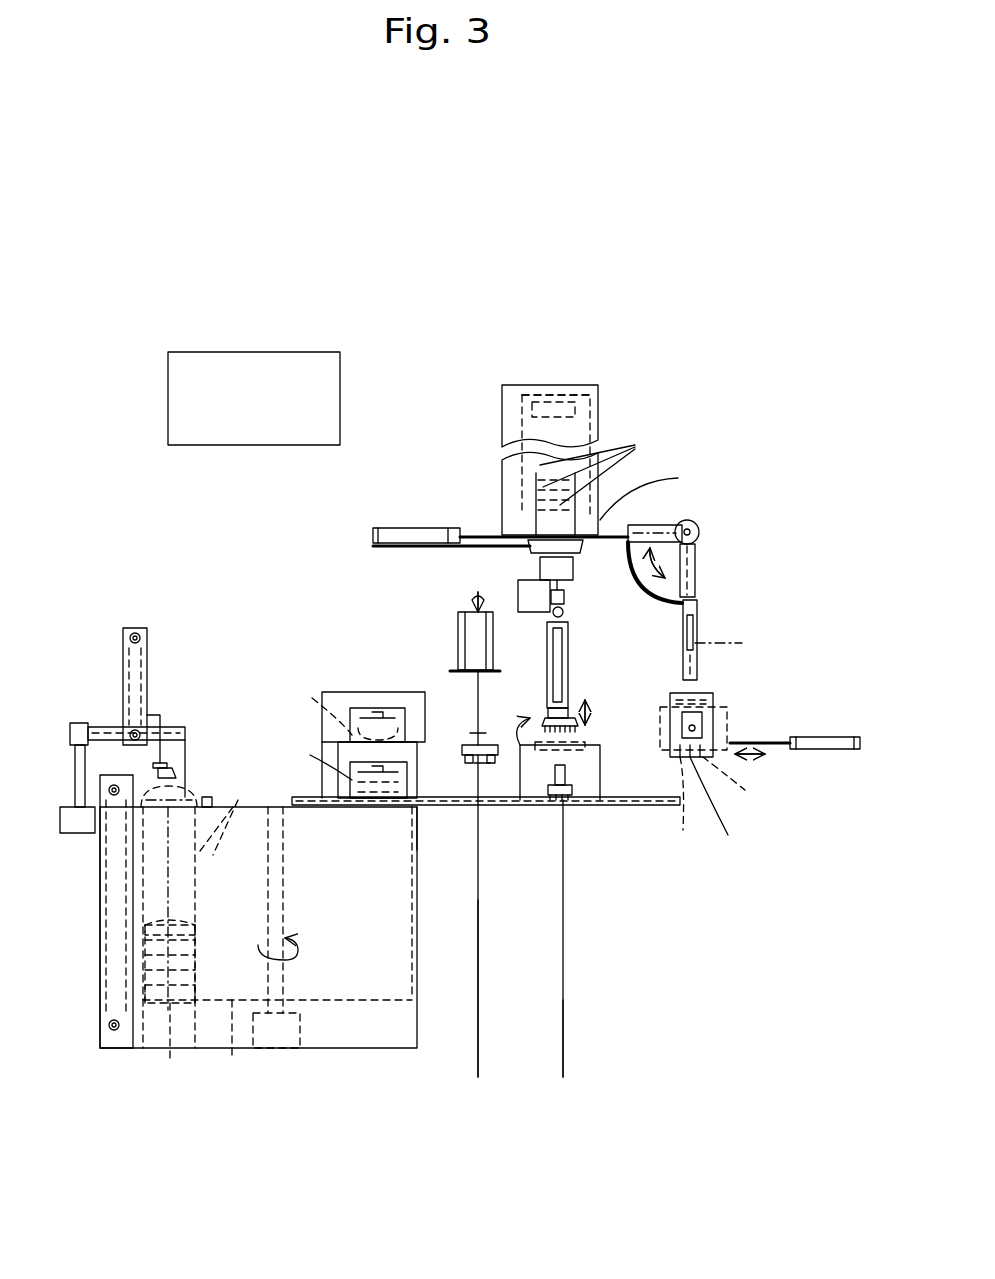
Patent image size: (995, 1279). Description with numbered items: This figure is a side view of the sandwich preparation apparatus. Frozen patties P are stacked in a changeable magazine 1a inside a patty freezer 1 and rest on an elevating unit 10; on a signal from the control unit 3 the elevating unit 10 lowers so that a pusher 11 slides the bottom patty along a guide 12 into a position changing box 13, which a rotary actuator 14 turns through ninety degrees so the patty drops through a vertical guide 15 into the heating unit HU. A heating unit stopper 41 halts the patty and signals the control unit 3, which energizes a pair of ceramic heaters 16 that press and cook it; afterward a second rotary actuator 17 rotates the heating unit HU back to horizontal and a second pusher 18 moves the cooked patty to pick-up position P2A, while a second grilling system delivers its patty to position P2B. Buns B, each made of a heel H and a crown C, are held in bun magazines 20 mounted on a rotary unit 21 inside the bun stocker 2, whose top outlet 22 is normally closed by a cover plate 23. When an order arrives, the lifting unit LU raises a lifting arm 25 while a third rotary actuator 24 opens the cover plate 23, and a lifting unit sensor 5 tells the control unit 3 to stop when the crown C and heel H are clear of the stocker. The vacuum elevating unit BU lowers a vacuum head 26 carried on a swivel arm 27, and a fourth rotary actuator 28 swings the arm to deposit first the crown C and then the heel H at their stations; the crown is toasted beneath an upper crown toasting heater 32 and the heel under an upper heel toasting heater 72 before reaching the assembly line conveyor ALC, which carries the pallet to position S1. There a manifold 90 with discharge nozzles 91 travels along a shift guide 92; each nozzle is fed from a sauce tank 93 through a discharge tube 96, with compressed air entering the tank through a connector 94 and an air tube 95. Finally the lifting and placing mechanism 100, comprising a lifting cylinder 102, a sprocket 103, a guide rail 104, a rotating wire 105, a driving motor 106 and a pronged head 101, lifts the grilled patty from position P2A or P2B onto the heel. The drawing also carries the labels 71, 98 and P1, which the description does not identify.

The patty freezer 1 is at (494, 413).
The changeable magazine 1a is at (578, 398).
The bun stocker 2 is at (428, 933).
The control unit 3 is at (313, 352).
The lifting unit sensor 5 is at (128, 800).
The elevating unit 10 is at (460, 547).
The pusher 11 is at (430, 523).
The guide 12 is at (688, 522).
The position changing box 13 is at (695, 522).
The rotary actuator 14 is at (700, 537).
The vertical guide 15 is at (698, 630).
The ceramic heaters 16 is at (715, 811).
The second rotary actuator 17 is at (718, 700).
The second pusher 18 is at (805, 757).
The bun magazine 20 is at (236, 800).
The rotary unit 21 is at (259, 953).
The outlet 22 is at (148, 790).
The cover plate 23 is at (208, 800).
The third rotary actuator 24 is at (214, 795).
The lifting arm 25 is at (166, 1051).
The vacuum head 26 is at (178, 785).
The swivel arm 27 is at (110, 727).
The fourth rotary actuator 28 is at (70, 807).
The upper crown toasting heater 32 is at (358, 718).
The heating unit stopper 41 is at (720, 813).
The support 71 is at (395, 852).
The upper heel toasting heater 72 is at (398, 805).
The manifold 90 is at (492, 800).
The discharge nozzles 91 is at (475, 765).
The shift guide 92 is at (468, 745).
The sauce tank 93 is at (458, 634).
The connector 94 is at (470, 601).
The air tube 95 is at (525, 550).
The discharge tube 96 is at (458, 680).
The supply line 98 is at (442, 612).
The lifting and placing mechanism 100 is at (562, 800).
The head 101 is at (600, 800).
The lifting cylinder 102 is at (580, 695).
The sprocket 103 is at (563, 628).
The guide rail 104 is at (565, 660).
The rotating wire 105 is at (566, 600).
The driving motor 106 is at (519, 613).
The frozen patties P is at (654, 541).
The pipette position P1 is at (575, 800).
The pick-up position P2A is at (559, 956).
The second patty position P2B is at (559, 1076).
The pallet position S1 is at (475, 1006).
The assembly line conveyor ALC is at (498, 800).
The buns B is at (145, 940).
The crown C is at (48, 972).
The heel H is at (48, 1010).
The lifting unit LU is at (97, 892).
The vacuum elevating unit BU is at (156, 622).
The heating unit HU is at (735, 685).